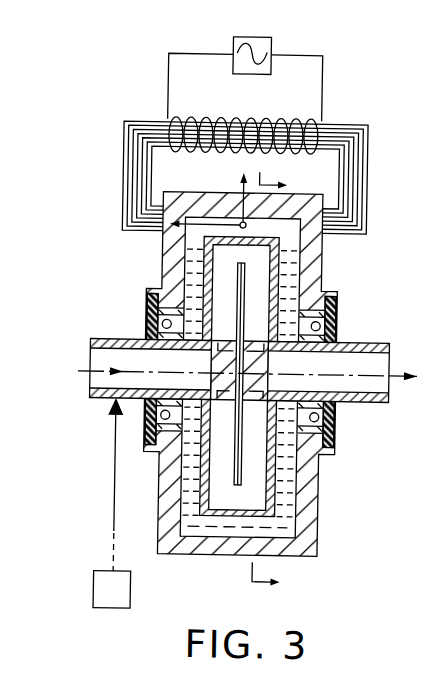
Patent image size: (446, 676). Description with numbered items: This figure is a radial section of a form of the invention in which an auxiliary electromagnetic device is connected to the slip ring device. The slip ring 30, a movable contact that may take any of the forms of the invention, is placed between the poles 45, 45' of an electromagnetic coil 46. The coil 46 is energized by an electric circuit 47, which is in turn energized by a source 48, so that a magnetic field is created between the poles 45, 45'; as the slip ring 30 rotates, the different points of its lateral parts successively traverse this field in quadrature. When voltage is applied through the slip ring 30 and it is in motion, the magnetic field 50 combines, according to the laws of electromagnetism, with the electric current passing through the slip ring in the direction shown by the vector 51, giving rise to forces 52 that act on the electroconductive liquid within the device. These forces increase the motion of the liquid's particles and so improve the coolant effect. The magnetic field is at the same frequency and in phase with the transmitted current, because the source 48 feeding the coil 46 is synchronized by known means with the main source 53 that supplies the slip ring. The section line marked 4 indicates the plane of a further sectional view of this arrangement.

The slip ring 30 is at (198, 556).
The pole 45 is at (148, 176).
The pole 45' is at (330, 179).
The electromagnetic coil 46 is at (246, 120).
The electric circuit 47 is at (164, 82).
The source 48 is at (268, 49).
The magnetic field 50 is at (207, 220).
The vector 51 is at (241, 190).
The forces 52 is at (298, 225).
The main source 53 is at (107, 599).
The section line 4- 4 is at (280, 377).